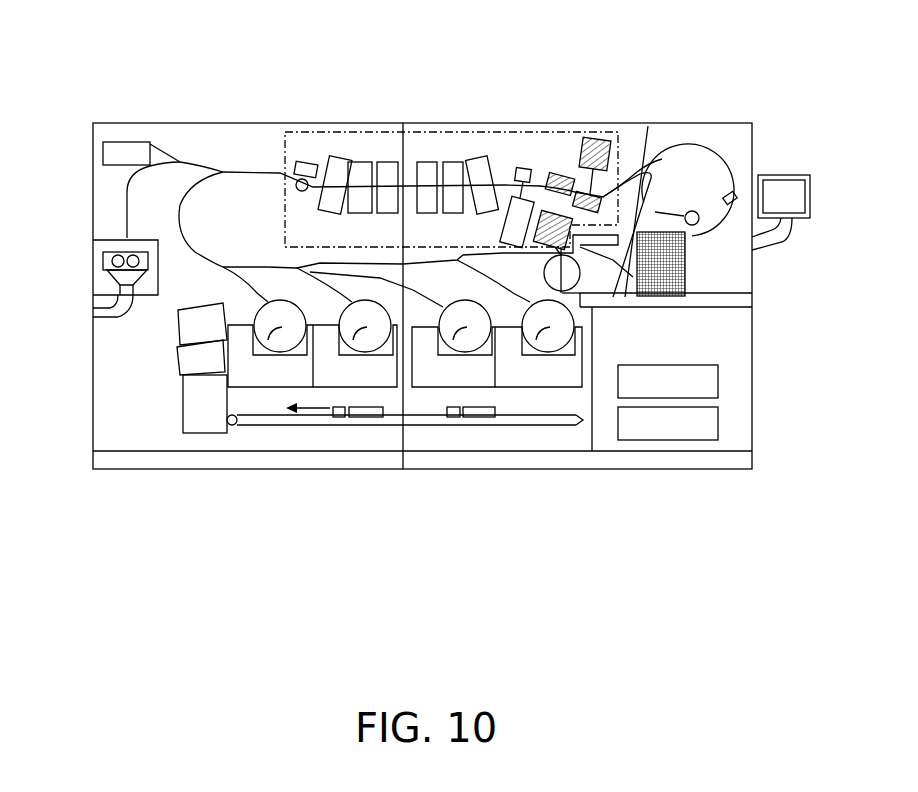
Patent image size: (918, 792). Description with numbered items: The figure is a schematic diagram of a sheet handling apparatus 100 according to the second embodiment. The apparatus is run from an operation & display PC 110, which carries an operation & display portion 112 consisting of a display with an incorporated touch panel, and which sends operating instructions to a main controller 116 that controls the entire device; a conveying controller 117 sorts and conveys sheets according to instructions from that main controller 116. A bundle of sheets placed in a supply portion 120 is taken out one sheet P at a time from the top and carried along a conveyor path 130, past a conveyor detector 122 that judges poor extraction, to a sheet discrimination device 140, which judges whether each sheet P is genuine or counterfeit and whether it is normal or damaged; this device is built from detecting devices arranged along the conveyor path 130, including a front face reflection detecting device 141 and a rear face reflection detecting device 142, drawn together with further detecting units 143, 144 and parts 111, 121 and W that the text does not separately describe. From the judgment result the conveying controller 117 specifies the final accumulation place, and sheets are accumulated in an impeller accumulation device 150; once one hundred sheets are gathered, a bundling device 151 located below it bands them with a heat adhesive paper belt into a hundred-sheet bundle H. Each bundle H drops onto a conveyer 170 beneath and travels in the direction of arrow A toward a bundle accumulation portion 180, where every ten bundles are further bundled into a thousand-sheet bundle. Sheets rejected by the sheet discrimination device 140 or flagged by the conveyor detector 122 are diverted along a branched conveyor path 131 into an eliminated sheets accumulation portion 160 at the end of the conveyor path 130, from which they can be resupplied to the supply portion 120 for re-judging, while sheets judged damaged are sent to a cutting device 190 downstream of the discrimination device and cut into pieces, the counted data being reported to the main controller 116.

The sheet handling apparatus 100 is at (371, 118).
The operation & display PC 110 is at (774, 165).
The support bar 111 is at (717, 300).
The operation & display portion 112 is at (790, 198).
The main controller 116 is at (682, 427).
The conveying controller 117 is at (718, 378).
The supply portion 120 is at (647, 303).
The feed roller 121 is at (698, 210).
The conveyor detector 122 is at (728, 205).
The conveyor path 130 is at (680, 140).
The conveyor path 131 is at (648, 126).
The sheet discrimination device 140 is at (421, 133).
The front face reflection detecting device 141 is at (594, 137).
The rear face reflection detecting device 142 is at (549, 164).
The sensor 143 is at (521, 158).
The print head 144 is at (476, 140).
The impeller accumulation device 150 is at (281, 338).
The 100 sheets bundling device 151 is at (257, 370).
The eliminated sheets accumulation portion 160 is at (600, 295).
The conveyer 170 is at (427, 443).
The 100 sheets bundle accumulation portion 180 is at (187, 353).
The cutting device 190 is at (103, 261).
The web W is at (545, 183).
The sheet P is at (668, 210).
The 100 sheets bundle H is at (370, 420).
The arrow A is at (308, 401).